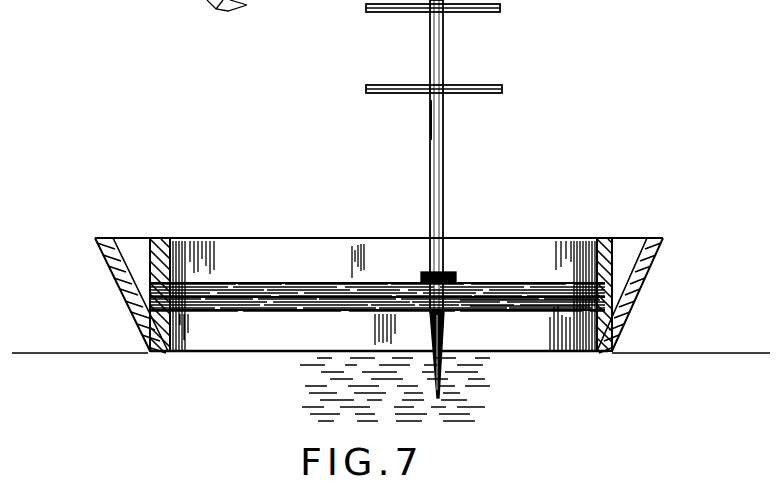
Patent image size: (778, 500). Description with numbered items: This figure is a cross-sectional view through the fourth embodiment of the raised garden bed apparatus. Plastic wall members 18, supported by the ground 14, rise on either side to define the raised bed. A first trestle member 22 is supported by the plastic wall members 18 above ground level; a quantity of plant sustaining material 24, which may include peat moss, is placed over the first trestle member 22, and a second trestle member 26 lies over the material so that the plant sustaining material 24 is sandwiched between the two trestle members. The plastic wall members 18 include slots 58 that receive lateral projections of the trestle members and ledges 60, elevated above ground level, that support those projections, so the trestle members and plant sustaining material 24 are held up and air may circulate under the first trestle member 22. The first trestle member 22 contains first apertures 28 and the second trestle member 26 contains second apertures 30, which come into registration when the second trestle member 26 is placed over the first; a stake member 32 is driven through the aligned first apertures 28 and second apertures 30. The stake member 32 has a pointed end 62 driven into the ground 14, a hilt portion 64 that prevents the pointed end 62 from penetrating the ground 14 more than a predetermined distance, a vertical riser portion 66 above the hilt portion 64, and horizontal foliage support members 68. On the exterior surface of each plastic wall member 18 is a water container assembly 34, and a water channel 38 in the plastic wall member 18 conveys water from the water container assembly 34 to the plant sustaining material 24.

The ground 14 is at (376, 405).
The plastic wall member 18 is at (140, 246).
The first trestle member 22 is at (360, 313).
The plant sustaining material 24 is at (515, 310).
The second trestle member 26 is at (398, 282).
The first apertures 28 is at (300, 312).
The second apertures 30 is at (315, 283).
The stake member 32 is at (443, 152).
The water container assembly 34 is at (118, 271).
The water channel 38 is at (140, 300).
The slots 58 is at (176, 247).
The ledges 60 is at (153, 352).
The pointed end 62 is at (446, 367).
The hilt portion 64 is at (452, 272).
The vertical riser portion 66 is at (430, 123).
The horizontal foliage support member 68 is at (500, 12).